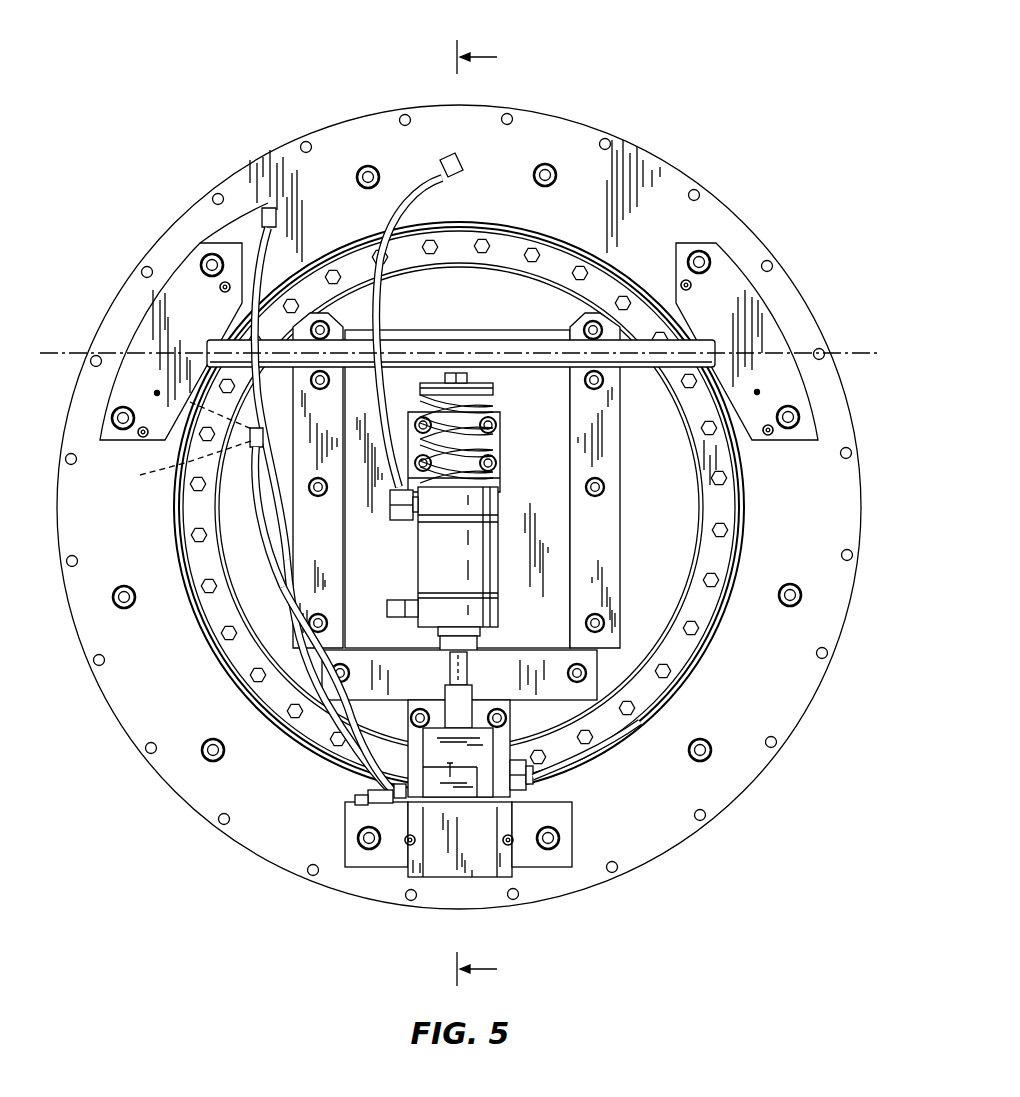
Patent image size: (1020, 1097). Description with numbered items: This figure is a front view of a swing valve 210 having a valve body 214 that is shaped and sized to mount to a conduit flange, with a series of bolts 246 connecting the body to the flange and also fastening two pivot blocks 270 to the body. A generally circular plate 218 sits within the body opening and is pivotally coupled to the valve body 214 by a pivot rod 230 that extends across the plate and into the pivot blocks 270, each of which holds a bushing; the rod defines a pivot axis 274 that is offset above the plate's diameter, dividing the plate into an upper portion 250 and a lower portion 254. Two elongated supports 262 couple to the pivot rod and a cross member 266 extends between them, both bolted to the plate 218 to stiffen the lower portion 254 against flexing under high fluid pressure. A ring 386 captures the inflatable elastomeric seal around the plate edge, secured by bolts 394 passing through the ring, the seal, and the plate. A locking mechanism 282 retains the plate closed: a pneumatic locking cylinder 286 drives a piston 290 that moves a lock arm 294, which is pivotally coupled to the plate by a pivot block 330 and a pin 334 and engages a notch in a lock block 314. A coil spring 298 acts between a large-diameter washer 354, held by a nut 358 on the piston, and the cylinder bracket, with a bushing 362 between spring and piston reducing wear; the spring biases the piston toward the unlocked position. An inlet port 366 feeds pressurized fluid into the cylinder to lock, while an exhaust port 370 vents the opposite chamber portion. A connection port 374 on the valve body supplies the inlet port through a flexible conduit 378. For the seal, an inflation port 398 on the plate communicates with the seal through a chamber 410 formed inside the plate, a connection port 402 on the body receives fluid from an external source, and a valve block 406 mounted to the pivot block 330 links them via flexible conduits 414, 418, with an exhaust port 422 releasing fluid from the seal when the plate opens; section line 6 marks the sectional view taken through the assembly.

The swing valve 210 is at (716, 80).
The valve body 214 is at (748, 757).
The plate 218 is at (700, 553).
The pivot rod 230 is at (746, 318).
The bolts 246 is at (698, 253).
The upper portion 250 is at (512, 292).
The lower portion 254 is at (703, 702).
The elongated supports 262 is at (313, 523).
The cross member 266 is at (600, 748).
The pivot blocks 270 is at (147, 330).
The pivot axis 274 is at (866, 352).
The locking mechanism 282 is at (526, 410).
The locking cylinder 286 is at (500, 553).
The piston 290 is at (378, 790).
The lock arm 294 is at (398, 803).
The spring 298 is at (489, 433).
The lock block 314 is at (442, 862).
The pivot block 330 is at (478, 712).
The pin 334 is at (535, 780).
The washer 354 is at (437, 372).
The nut 358 is at (463, 372).
The bushing 362 is at (473, 465).
The inlet port 366 is at (403, 516).
The exhaust port 370 is at (402, 600).
The connection port 374 is at (452, 152).
The flexible conduit 378 is at (378, 224).
The ring 386 is at (622, 289).
The bolts 394 is at (581, 268).
The inflation port 398 is at (254, 447).
The connection port 402 is at (262, 218).
The valve block 406 is at (385, 800).
The chamber 410 is at (176, 442).
The flexible conduit 414 is at (323, 660).
The flexible conduit 418 is at (268, 596).
The exhaust port 422 is at (440, 770).
The section line 6 is at (485, 513).